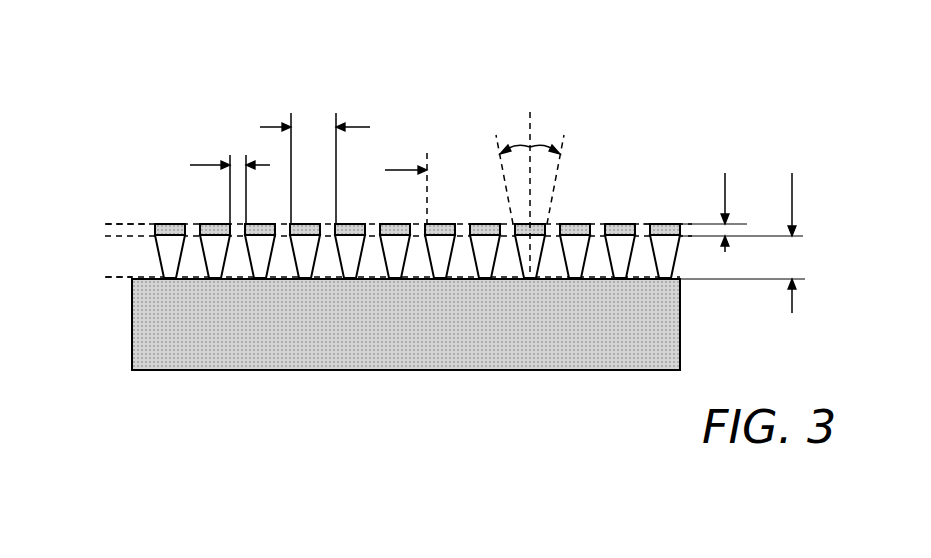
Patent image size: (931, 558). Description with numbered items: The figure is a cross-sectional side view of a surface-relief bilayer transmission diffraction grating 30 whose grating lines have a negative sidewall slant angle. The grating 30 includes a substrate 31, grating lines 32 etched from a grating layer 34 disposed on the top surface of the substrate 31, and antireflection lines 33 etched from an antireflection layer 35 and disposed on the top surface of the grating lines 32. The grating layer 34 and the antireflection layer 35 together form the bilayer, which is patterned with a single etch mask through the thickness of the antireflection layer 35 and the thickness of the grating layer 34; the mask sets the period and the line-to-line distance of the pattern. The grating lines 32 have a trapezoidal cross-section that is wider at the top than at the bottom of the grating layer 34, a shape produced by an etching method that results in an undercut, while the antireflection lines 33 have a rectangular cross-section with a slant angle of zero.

The surface-relief bilayer transmission diffraction grating 30 is at (472, 68).
The substrate 31 is at (613, 337).
The grating lines 32 is at (634, 240).
The antireflection lines 33 is at (570, 219).
The grating layer 34 is at (106, 237).
The antireflection layer 35 is at (106, 224).